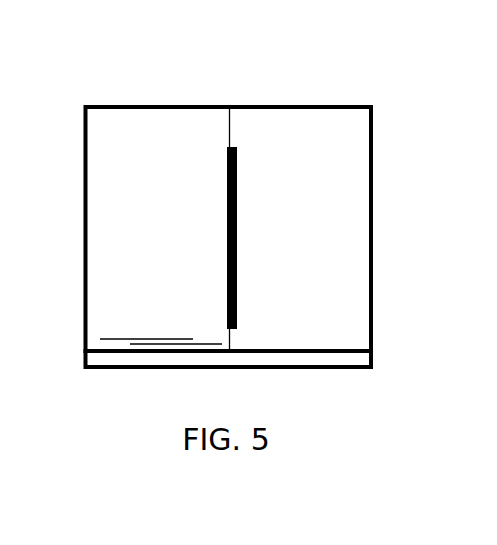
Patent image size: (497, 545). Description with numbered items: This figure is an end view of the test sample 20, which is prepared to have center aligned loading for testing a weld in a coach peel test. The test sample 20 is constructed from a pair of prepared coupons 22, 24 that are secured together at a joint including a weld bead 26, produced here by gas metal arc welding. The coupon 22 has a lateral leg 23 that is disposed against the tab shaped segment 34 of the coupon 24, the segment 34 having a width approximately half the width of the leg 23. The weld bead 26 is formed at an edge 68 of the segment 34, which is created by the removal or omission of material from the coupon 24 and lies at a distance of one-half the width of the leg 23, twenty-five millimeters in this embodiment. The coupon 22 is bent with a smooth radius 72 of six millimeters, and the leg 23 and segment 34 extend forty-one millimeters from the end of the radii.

The test sample 20 is at (328, 90).
The coupon 22 is at (372, 179).
The lateral leg 23 is at (292, 232).
The coupon 24 is at (372, 360).
The weld bead 26 is at (237, 178).
The segment 34 is at (142, 196).
The edge 68 is at (231, 131).
The radius 72 is at (115, 343).